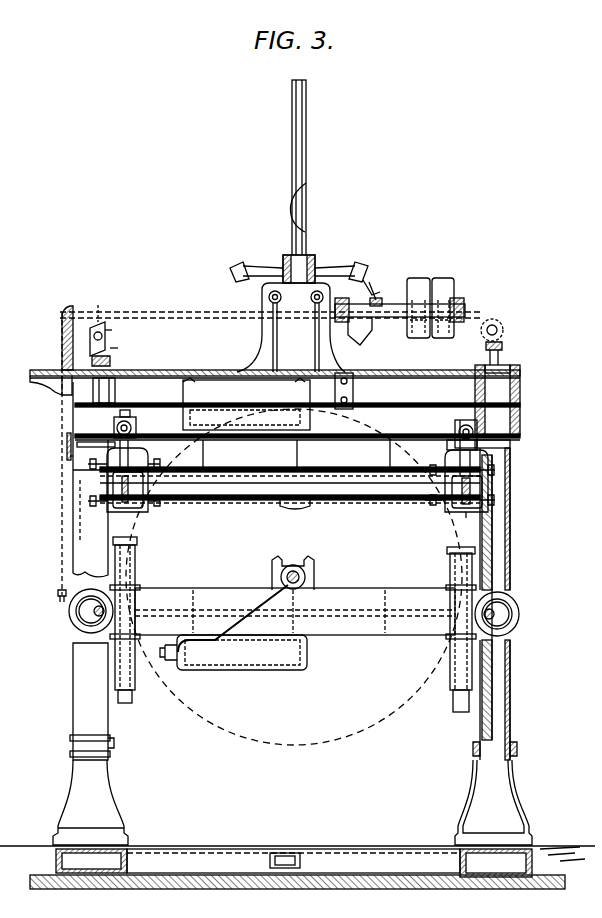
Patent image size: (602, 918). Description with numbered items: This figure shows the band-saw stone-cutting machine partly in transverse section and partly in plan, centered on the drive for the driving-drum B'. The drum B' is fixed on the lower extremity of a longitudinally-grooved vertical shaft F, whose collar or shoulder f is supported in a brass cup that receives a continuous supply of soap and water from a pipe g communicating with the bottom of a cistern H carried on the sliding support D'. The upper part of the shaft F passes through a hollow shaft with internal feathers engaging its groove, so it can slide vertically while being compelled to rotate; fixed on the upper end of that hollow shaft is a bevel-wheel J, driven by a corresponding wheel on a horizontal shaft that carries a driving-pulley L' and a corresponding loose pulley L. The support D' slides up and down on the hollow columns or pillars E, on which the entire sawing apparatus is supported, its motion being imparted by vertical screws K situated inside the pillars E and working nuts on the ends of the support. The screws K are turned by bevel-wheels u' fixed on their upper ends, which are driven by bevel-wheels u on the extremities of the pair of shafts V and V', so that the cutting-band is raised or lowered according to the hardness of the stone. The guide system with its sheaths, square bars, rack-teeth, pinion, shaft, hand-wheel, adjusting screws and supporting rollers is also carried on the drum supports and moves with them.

The longitudinally-grooved vertical shaft F is at (306, 156).
The bevel-wheel J is at (299, 269).
The arm bracket j is at (366, 292).
The loose pulley L is at (443, 308).
The driving-pulley L' is at (418, 308).
The shaft V is at (492, 330).
The shaft V' is at (86, 332).
The bevel-wheel u is at (112, 329).
The bevel-wheel u' is at (118, 348).
The cistern H is at (235, 524).
The collar or shoulder f is at (191, 453).
The driving-drum B' is at (290, 577).
The support D' is at (295, 541).
The hollow columns or pillars E is at (519, 610).
The vertical screws K is at (294, 597).
The pipe g is at (226, 636).